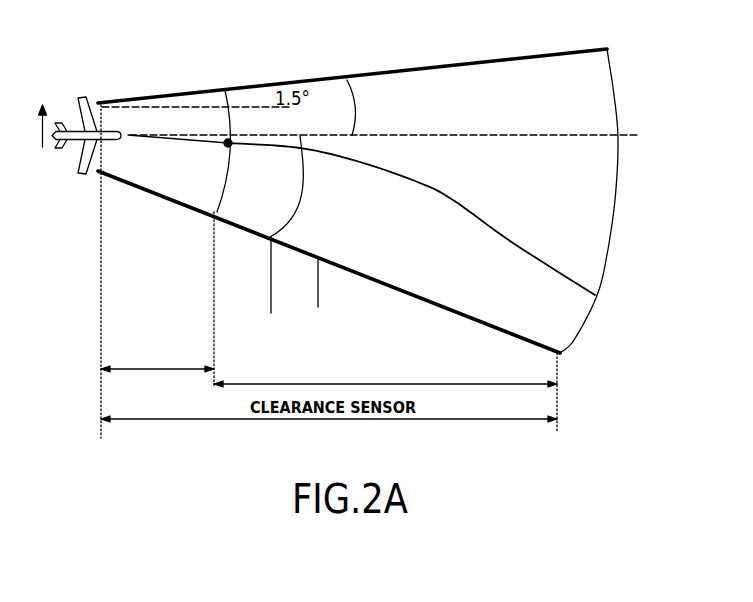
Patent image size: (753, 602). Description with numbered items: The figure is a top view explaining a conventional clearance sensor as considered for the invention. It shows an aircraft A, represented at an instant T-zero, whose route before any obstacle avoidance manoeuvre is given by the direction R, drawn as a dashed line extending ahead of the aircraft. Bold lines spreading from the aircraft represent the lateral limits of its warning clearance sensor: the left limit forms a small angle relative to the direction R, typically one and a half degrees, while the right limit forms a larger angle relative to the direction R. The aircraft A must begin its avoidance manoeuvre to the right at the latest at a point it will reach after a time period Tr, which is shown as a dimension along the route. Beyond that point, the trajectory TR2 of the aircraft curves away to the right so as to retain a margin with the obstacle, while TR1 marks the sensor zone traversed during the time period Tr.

The aircraft A is at (85, 158).
The first detection range boundary TR1 is at (173, 137).
The trajectory TR2 is at (447, 193).
The direction of the route R is at (500, 135).
The time period Tr is at (157, 358).